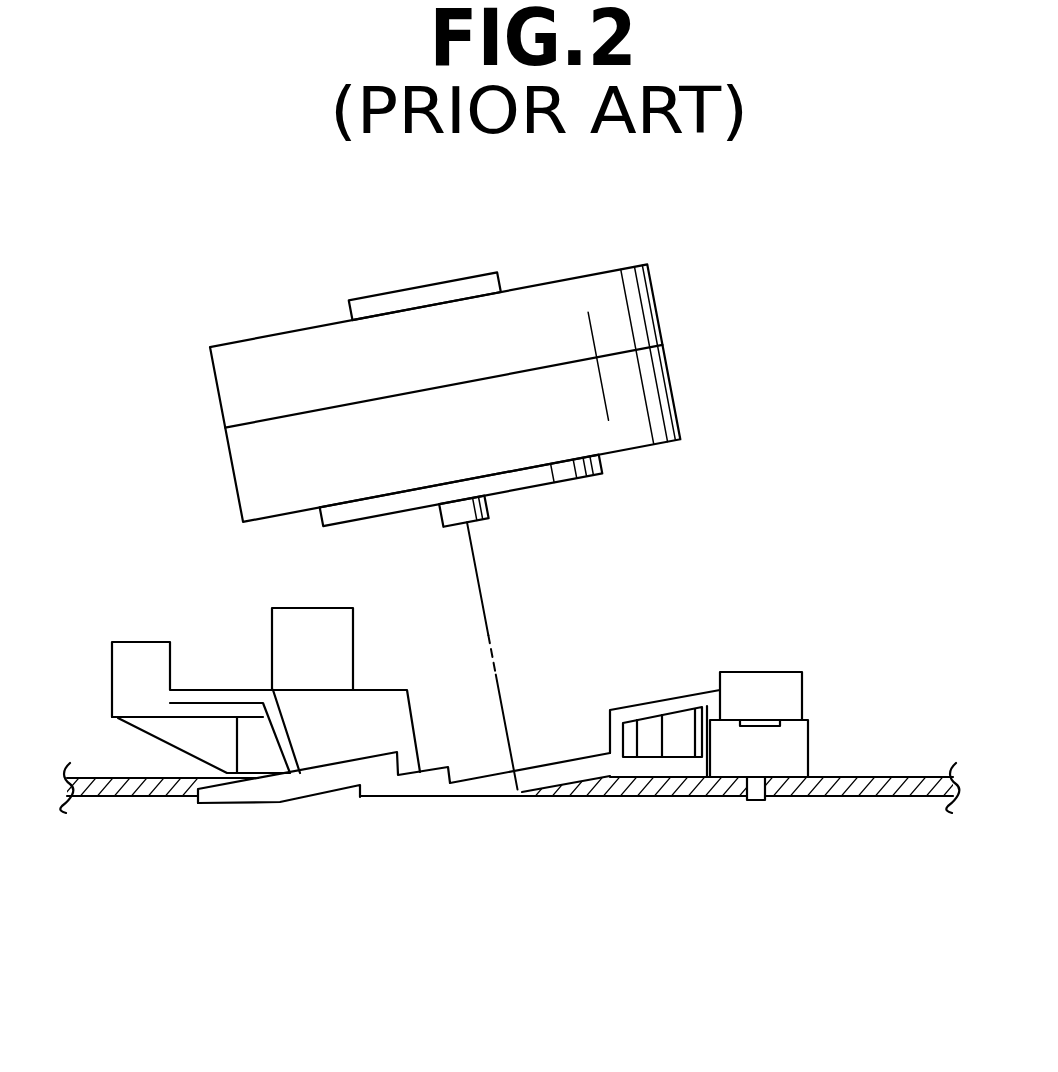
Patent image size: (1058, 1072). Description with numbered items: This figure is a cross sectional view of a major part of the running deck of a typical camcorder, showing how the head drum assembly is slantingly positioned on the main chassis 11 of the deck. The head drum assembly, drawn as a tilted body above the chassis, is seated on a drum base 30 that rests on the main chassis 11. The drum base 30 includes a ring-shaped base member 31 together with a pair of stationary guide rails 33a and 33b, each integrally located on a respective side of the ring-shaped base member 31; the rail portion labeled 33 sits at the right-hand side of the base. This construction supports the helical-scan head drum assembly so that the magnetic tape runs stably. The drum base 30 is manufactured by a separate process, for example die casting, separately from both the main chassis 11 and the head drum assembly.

The main chassis 11 is at (892, 800).
The drum base 30 is at (364, 808).
The ring-shaped base member 31 is at (490, 783).
The holding block 33 is at (783, 683).
The stationary guide rail 33a is at (207, 693).
The stationary guide rail 33b is at (657, 705).